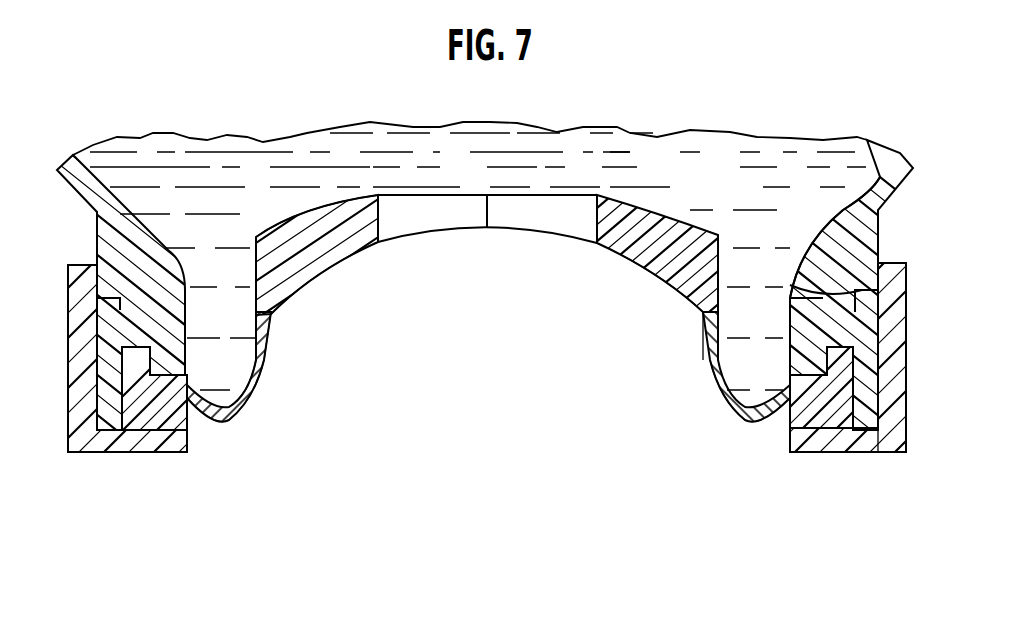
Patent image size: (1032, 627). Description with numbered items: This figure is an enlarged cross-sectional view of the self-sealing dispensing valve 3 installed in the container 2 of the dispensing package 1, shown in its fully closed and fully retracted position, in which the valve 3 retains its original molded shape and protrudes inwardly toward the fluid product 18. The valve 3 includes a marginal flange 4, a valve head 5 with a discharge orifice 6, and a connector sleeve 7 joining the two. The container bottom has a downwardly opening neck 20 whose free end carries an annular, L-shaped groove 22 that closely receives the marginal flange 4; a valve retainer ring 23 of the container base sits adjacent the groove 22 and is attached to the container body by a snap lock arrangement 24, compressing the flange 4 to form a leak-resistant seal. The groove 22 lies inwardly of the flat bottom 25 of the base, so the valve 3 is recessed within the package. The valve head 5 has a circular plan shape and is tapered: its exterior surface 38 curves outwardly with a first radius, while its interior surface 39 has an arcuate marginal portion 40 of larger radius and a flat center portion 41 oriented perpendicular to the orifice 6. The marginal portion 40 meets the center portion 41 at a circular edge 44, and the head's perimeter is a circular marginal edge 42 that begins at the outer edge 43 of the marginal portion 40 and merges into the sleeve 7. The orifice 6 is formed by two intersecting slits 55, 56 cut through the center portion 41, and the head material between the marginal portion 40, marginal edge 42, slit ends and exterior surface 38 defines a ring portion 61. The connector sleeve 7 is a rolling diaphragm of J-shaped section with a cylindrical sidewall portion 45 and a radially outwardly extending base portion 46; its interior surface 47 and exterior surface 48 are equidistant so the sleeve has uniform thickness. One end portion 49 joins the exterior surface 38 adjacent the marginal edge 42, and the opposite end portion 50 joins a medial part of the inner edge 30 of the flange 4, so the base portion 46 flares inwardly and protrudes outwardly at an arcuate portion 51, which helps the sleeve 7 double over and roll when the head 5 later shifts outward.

The dispensing package 1 is at (737, 110).
The container 2 is at (880, 182).
The self-sealing dispensing valve 3 is at (716, 419).
The marginal flange 4 is at (149, 420).
The valve head 5 is at (292, 214).
The discharge orifice 6 is at (482, 188).
The connector sleeve 7 is at (255, 318).
The fluid product 18 is at (655, 163).
The neck 20 is at (820, 240).
The groove 22 is at (797, 368).
The valve retainer ring 23 is at (803, 445).
The snap lock arrangement 24 is at (812, 294).
The bottom 25 is at (873, 453).
The inner edge 30 is at (187, 383).
The exterior surface 38 is at (328, 278).
The interior surface 39 is at (261, 232).
The marginal portion 40 is at (682, 217).
The center portion 41 is at (562, 195).
The marginal edge 42 is at (255, 255).
The outer edge 43 is at (717, 222).
The circular edge 44 is at (376, 195).
The cylindrical sidewall portion 45 is at (265, 375).
The base portion 46 is at (226, 421).
The interior surface 47 is at (255, 348).
The exterior surface 48 is at (270, 356).
The end portion 49 is at (708, 332).
The end portion 50 is at (781, 407).
The arcuate portion 51 is at (251, 408).
The slit 55 is at (430, 226).
The slit 56 is at (489, 217).
The ring portion 61 is at (628, 263).